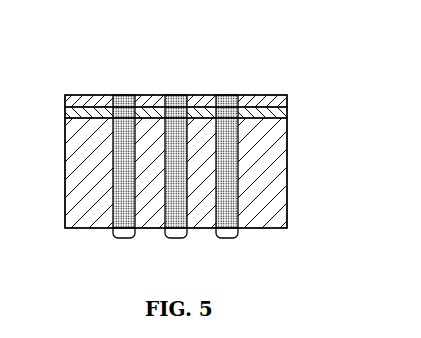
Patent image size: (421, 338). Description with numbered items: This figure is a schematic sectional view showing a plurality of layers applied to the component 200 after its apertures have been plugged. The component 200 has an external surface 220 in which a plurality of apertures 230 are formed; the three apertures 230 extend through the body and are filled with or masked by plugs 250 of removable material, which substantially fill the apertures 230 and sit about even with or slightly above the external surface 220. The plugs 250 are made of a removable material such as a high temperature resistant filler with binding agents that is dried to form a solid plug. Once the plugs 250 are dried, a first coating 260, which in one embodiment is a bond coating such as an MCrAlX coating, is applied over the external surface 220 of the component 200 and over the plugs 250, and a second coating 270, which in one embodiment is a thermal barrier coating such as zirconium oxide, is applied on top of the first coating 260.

The component 200 is at (300, 54).
The external surface 220 is at (268, 129).
The apertures 230 is at (121, 238).
The plugs 250 is at (165, 125).
The first coating 260 is at (287, 113).
The second coating 270 is at (287, 101).